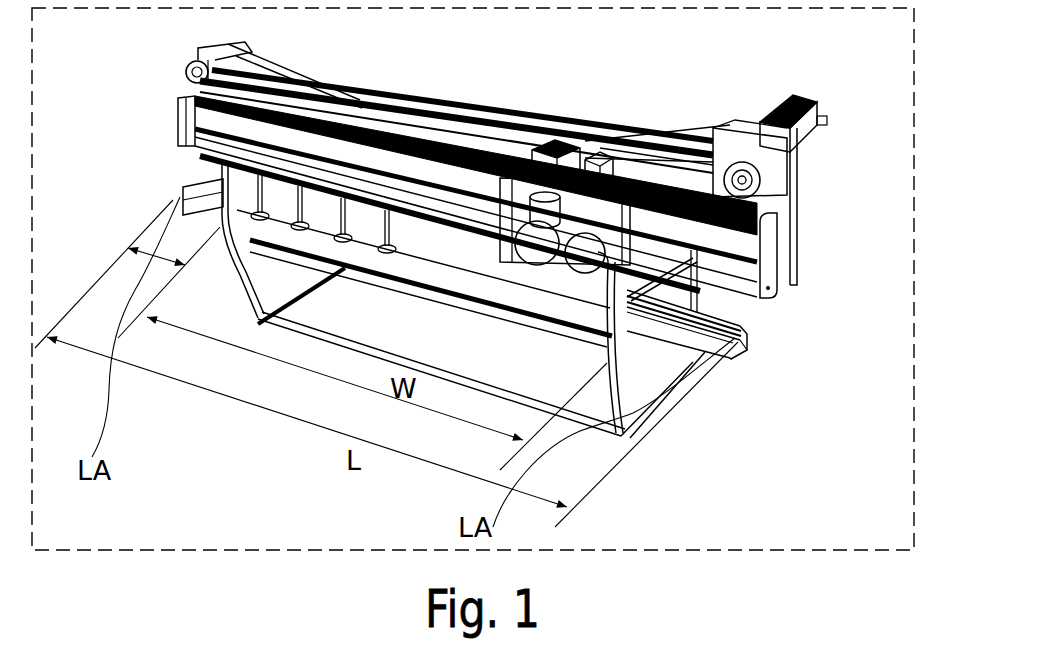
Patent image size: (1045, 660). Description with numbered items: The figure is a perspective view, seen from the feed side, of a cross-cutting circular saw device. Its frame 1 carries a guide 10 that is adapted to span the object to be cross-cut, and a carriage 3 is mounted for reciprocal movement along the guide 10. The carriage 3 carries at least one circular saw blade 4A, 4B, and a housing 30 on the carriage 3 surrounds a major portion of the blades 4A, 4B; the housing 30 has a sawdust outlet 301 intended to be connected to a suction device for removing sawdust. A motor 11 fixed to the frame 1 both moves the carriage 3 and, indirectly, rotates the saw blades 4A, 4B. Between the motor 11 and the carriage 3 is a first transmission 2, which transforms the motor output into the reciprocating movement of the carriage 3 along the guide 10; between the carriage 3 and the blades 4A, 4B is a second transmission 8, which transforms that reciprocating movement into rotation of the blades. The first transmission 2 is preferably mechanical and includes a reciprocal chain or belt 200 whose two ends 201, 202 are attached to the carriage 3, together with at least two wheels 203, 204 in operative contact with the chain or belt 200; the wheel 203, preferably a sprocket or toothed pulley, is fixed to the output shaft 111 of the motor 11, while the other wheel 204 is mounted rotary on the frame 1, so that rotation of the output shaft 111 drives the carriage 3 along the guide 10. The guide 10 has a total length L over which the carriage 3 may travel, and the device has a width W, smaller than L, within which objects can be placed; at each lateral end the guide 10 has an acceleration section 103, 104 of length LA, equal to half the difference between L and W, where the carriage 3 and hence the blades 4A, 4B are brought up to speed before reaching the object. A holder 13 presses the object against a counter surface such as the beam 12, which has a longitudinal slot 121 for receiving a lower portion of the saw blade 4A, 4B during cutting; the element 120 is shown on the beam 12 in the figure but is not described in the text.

The frame 1 is at (175, 132).
The guide 10 is at (186, 110).
The holder 13 is at (207, 163).
The wheel 204 is at (185, 72).
The reciprocal chain or belt 200 is at (330, 100).
The first transmission 2 is at (700, 127).
The end of the reciprocal chain or belt 201 is at (628, 133).
The wheel 203 is at (763, 127).
The output shaft 111 is at (790, 175).
The motor 11 is at (837, 137).
The carriage 3 is at (530, 140).
The housing 30 is at (517, 133).
The end of the reciprocal chain or belt 202 is at (537, 143).
The sawdust outlet 301 is at (537, 233).
The circular saw blade 4B is at (530, 255).
The circular saw blade 4A is at (590, 277).
The acceleration section 104 is at (110, 318).
The acceleration section 103 is at (603, 450).
The beam 12 is at (718, 355).
The depth rail 120 is at (743, 323).
The longitudinal slot 121 is at (752, 340).
The second transmission 8 is at (728, 290).